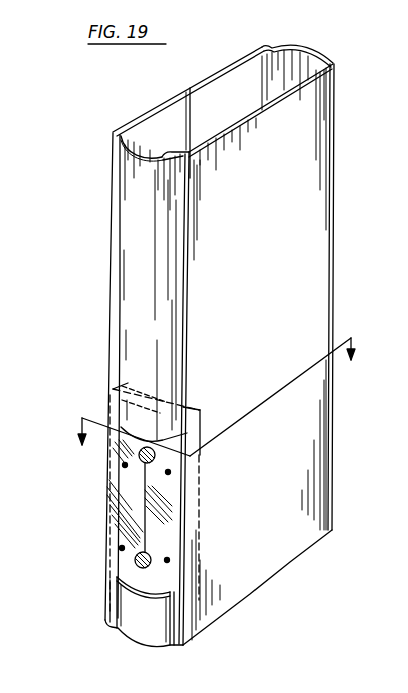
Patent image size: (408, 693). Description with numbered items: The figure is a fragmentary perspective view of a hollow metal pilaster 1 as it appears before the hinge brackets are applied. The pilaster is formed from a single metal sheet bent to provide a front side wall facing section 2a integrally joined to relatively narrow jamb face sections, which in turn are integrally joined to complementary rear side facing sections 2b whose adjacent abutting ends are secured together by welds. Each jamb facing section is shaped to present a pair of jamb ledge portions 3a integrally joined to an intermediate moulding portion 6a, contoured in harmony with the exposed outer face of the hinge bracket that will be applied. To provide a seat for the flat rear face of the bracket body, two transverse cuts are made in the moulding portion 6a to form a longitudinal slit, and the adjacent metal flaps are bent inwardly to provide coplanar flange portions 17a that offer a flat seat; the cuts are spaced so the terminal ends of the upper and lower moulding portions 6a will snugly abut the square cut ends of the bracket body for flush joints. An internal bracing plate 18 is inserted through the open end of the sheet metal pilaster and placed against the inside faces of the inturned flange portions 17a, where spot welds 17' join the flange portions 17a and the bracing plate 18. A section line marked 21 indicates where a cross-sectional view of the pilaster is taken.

The sheet pile / profile element 1 is at (108, 129).
The front side wall facing section 2a is at (318, 232).
The rear side facing sections 2b is at (127, 125).
The jamb ledge portions 3a is at (115, 142).
The intermediate moulding portion 6a is at (133, 157).
The coplanar flange portions 17a is at (167, 529).
The spot welds 17' is at (187, 558).
The internal bracing plate 18 is at (117, 513).
The section line 21 is at (211, 468).